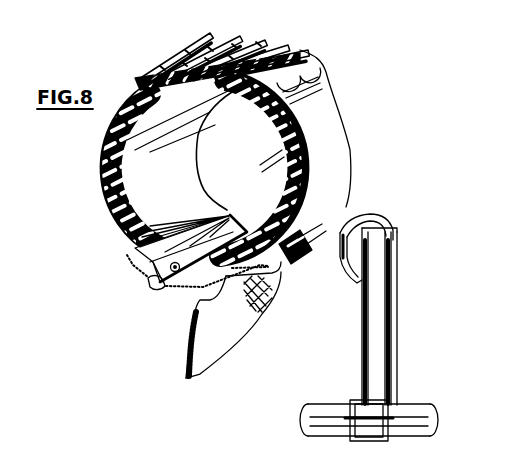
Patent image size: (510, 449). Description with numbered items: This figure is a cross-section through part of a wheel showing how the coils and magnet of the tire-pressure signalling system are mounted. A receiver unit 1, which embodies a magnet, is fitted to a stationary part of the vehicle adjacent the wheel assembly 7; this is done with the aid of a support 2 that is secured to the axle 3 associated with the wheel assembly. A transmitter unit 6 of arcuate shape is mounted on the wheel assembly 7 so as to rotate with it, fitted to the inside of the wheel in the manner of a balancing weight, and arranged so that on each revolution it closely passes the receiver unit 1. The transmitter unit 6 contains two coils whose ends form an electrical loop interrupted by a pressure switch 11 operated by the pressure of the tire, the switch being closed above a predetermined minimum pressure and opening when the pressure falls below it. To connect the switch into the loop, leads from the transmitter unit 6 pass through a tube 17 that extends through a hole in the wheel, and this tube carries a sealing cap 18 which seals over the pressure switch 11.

The receiver unit 1 is at (380, 223).
The support 2 is at (392, 304).
The axle 3 is at (408, 407).
The transmitter unit 6 is at (304, 256).
The wheel assembly 7 is at (214, 358).
The pressure switch 11 is at (148, 283).
The tube 17 is at (237, 281).
The sealing cap 18 is at (159, 292).